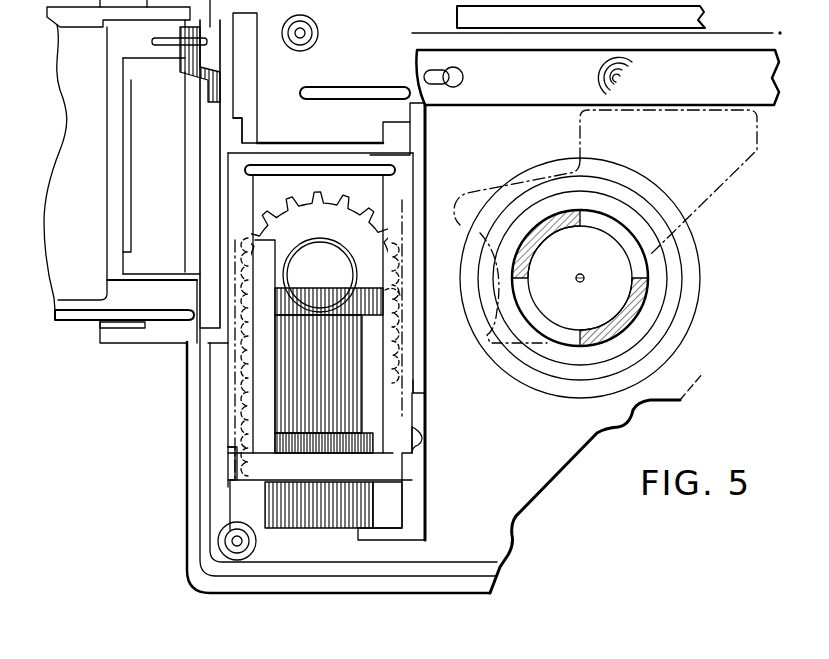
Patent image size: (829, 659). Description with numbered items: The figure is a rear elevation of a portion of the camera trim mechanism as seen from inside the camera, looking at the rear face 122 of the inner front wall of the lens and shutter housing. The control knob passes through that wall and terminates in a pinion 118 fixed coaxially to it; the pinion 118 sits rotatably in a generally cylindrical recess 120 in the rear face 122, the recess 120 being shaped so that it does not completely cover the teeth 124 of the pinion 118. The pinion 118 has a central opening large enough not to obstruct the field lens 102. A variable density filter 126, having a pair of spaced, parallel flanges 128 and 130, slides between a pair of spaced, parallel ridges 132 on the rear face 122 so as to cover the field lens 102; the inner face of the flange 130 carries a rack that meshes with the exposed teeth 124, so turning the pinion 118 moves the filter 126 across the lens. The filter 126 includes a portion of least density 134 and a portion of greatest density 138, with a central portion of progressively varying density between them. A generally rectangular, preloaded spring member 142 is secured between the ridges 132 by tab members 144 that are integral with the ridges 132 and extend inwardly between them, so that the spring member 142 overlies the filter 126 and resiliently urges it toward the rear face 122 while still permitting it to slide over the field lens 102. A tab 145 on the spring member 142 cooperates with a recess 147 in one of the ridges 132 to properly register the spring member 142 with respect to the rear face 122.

The field lens 102 is at (318, 250).
The pinion 118 is at (360, 245).
The cylindrical recess 120 is at (338, 203).
The rear face 122 is at (500, 436).
The teeth 124 is at (300, 195).
The variable density filter 126 is at (329, 406).
The flange 128 is at (393, 347).
The flange 130 is at (240, 425).
The ridges 132 is at (230, 423).
The portion of least density 134 is at (353, 308).
The portion of greatest density 138 is at (330, 510).
The spring member 142 is at (330, 478).
The tab members 144 is at (237, 133).
The tab 145 is at (420, 400).
The recess 147 is at (412, 425).